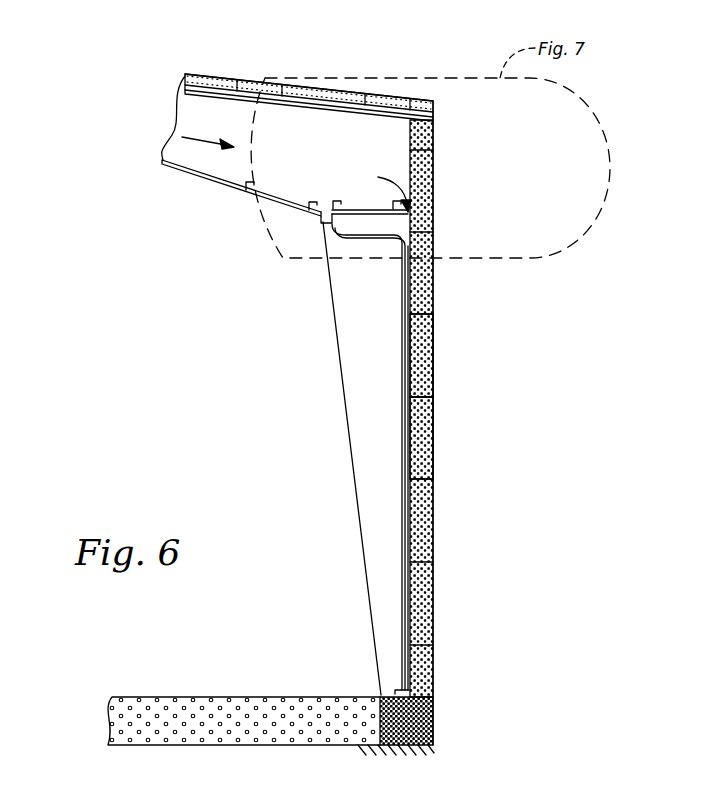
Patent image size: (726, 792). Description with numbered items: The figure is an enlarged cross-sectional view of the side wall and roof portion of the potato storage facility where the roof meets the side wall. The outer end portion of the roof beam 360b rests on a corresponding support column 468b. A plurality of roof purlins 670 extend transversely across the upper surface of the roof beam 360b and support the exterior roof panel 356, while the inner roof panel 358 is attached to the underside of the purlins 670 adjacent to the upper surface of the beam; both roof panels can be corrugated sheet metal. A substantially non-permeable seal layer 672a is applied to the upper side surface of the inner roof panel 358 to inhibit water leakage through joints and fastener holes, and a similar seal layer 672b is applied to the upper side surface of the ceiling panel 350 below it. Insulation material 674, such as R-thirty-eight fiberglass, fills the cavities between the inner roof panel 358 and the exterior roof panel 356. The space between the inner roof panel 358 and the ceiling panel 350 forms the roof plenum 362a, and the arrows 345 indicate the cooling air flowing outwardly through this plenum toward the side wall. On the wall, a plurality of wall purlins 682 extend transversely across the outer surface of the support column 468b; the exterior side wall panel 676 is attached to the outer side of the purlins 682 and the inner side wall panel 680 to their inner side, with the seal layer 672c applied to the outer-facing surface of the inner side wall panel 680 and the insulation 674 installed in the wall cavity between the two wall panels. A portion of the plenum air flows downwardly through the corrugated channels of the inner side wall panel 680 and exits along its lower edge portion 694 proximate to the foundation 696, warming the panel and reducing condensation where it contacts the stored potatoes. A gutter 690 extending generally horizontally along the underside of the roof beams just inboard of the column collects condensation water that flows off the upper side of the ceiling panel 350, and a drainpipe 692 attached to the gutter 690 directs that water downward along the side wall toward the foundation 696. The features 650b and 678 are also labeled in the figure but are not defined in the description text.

The exterior roof panel 356 is at (210, 73).
The insulation material 674 is at (185, 74).
The inner roof panel 358 is at (217, 93).
The seal layer 672b is at (162, 158).
The ceiling panel 350 is at (233, 217).
The roof beam 360b is at (203, 178).
The gutter 690 is at (323, 218).
The ceiling deck 650b is at (345, 232).
The drainpipe 692 is at (368, 237).
The support column 468b is at (330, 458).
The inner side wall panel 680 is at (408, 327).
The arrows 345 is at (212, 140).
The roof plenum 362a is at (364, 150).
The air flow arrow 678 is at (410, 133).
The exterior side wall panel 676 is at (317, 406).
The seal layer 672c is at (427, 357).
The wall purlins 682 is at (423, 477).
The lower edge portion 694 is at (383, 690).
The foundation 696 is at (437, 725).
The roof purlins 670 is at (275, 81).
The seal layer 672a is at (303, 55).